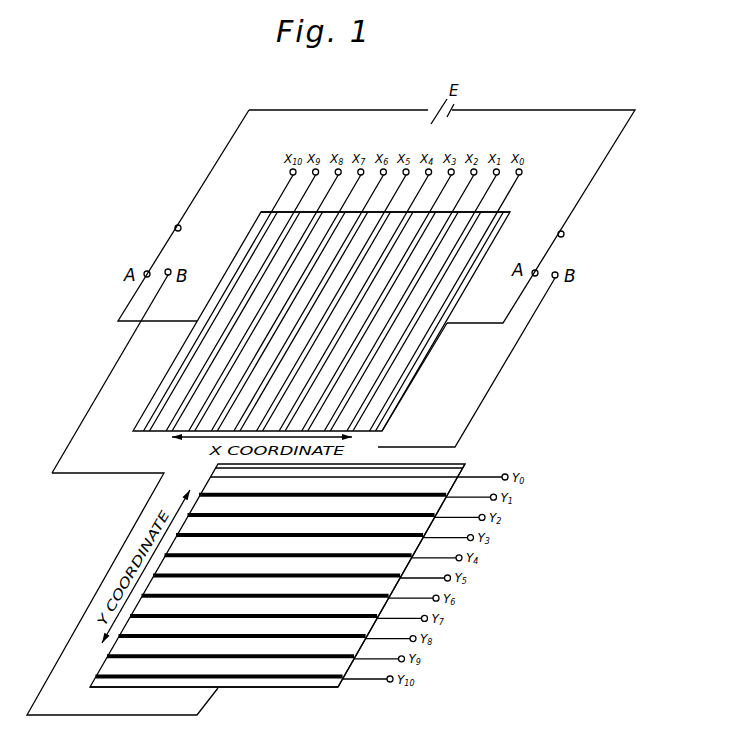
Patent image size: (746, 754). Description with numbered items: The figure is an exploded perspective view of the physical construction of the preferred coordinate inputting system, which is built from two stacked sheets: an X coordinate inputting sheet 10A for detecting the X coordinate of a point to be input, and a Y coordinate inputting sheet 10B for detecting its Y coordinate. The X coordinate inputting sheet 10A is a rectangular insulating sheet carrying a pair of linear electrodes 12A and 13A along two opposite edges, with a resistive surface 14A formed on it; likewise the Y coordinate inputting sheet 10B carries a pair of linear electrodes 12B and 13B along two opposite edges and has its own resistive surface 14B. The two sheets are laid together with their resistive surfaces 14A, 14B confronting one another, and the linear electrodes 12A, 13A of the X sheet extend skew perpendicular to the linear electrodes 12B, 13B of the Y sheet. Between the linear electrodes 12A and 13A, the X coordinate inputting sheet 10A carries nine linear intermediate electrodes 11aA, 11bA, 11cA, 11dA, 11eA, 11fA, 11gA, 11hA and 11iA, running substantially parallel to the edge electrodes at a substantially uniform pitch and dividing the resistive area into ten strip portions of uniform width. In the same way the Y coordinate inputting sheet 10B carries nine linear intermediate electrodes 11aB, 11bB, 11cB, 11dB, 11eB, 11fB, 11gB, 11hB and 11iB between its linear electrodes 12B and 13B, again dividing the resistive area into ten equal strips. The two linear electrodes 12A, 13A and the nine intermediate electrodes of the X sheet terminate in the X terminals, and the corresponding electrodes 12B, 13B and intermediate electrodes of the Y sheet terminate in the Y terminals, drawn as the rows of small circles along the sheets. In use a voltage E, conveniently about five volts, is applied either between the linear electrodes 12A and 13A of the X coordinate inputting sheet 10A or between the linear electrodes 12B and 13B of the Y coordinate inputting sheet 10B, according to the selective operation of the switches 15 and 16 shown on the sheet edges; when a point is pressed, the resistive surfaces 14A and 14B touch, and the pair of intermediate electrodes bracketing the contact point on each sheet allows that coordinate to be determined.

The X coordinate inputting sheet 10A is at (430, 355).
The Y coordinate inputting sheet 10B is at (471, 458).
The linear intermediate electrode 11aA is at (417, 318).
The linear intermediate electrode 11bA is at (403, 300).
The linear intermediate electrode 11cA is at (415, 300).
The linear intermediate electrode 11dA is at (412, 300).
The linear intermediate electrode 11eA is at (487, 256).
The linear intermediate electrode 11fA is at (473, 282).
The linear intermediate electrode 11gA is at (340, 293).
The linear intermediate electrode 11hA is at (262, 300).
The linear intermediate electrode 11iA is at (232, 318).
The linear intermediate electrode 11aB is at (262, 488).
The linear intermediate electrode 11bB is at (255, 508).
The linear intermediate electrode 11cB is at (248, 528).
The linear intermediate electrode 11dB is at (240, 548).
The linear intermediate electrode 11eB is at (233, 569).
The linear intermediate electrode 11fB is at (226, 589).
The linear intermediate electrode 11gB is at (218, 609).
The linear intermediate electrode 11hB is at (211, 629).
The linear intermediate electrode 11iB is at (204, 649).
The linear electrode 12A is at (168, 372).
The linear electrode 12B is at (245, 686).
The linear electrode 13A is at (408, 382).
The linear electrode 13B is at (412, 447).
The resistive surface 14A is at (483, 228).
The resistive surface 14B is at (331, 689).
The switch 15 is at (176, 231).
The switch 16 is at (563, 235).